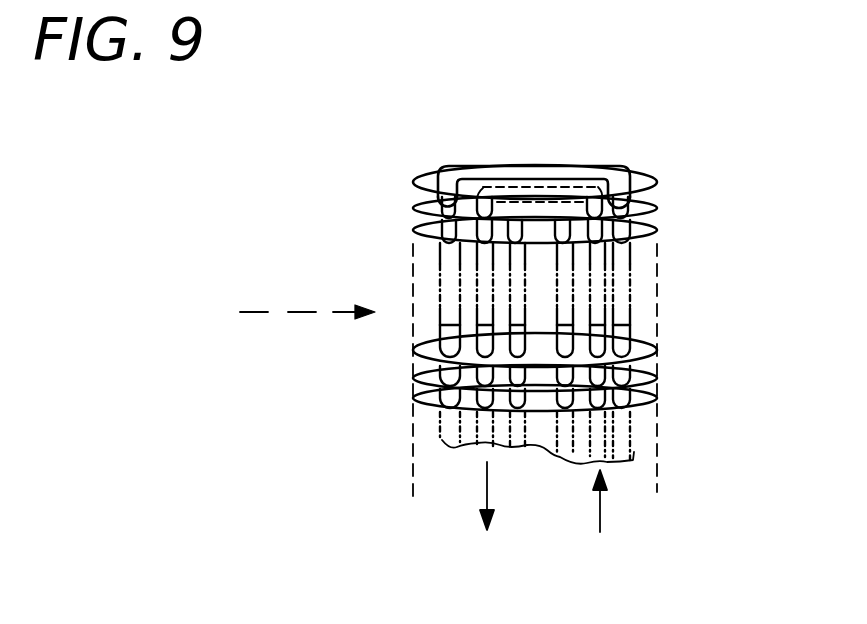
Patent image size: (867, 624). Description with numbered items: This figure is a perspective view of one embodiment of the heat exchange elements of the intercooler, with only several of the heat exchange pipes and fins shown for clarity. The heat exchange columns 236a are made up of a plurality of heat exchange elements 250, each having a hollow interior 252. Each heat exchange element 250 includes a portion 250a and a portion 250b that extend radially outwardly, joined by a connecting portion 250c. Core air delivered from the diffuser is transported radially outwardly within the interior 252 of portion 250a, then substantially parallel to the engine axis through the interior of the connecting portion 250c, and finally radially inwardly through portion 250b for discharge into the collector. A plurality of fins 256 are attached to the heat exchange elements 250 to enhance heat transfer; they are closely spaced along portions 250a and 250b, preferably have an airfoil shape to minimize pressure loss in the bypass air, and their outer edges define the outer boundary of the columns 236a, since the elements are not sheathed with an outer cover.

The heat exchange column 236a is at (442, 152).
The heat exchange element 250 is at (549, 162).
The portion 250b is at (580, 177).
The connecting portion 250c is at (450, 268).
The portion 250a is at (620, 253).
The hollow interior 252 is at (450, 318).
The fin 256 is at (440, 342).